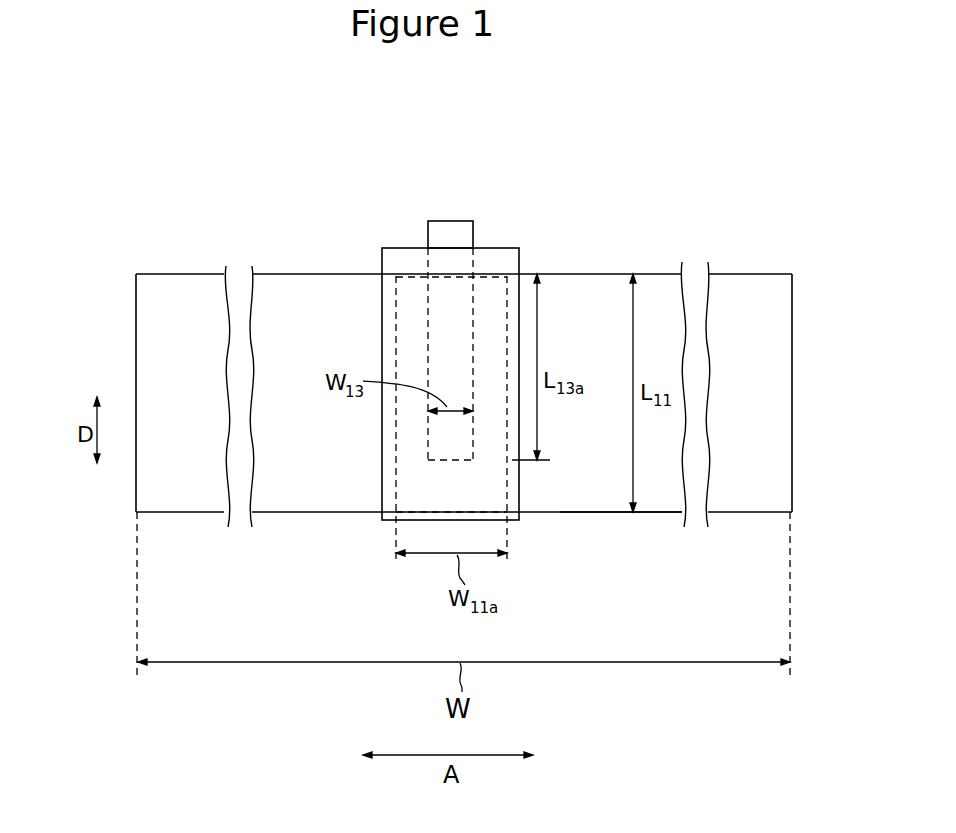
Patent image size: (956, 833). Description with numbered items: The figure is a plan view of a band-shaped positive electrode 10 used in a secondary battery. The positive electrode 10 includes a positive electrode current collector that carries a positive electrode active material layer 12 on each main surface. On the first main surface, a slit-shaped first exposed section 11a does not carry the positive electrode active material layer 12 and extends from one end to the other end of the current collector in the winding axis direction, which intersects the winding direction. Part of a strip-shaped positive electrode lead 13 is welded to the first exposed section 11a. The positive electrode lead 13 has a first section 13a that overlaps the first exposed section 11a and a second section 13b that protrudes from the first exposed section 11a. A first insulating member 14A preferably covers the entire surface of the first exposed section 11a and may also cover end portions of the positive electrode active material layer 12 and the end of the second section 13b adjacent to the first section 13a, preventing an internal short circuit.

The band-shaped positive electrode 10 is at (625, 218).
The first exposed section 11a is at (495, 485).
The positive electrode active material layer 12 is at (613, 497).
The positive electrode lead 13 is at (330, 177).
The first section 13a is at (442, 300).
The second section 13b is at (442, 235).
The first insulating member 14A is at (495, 258).